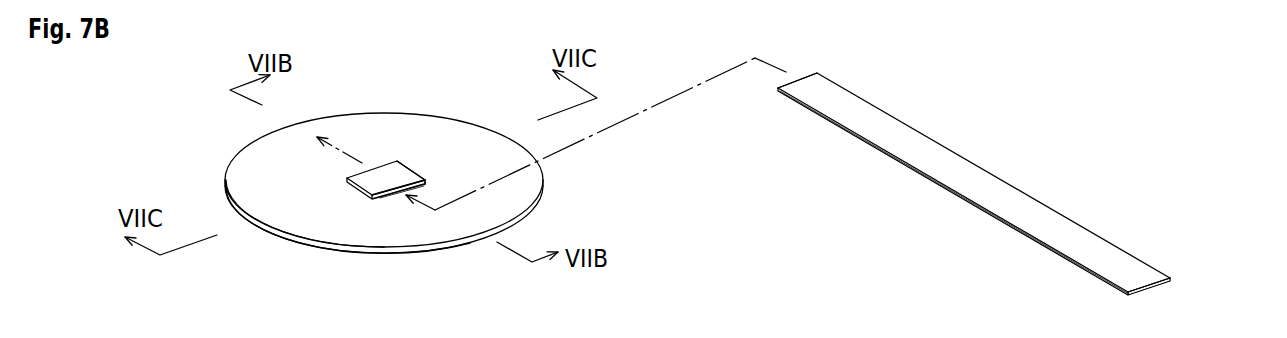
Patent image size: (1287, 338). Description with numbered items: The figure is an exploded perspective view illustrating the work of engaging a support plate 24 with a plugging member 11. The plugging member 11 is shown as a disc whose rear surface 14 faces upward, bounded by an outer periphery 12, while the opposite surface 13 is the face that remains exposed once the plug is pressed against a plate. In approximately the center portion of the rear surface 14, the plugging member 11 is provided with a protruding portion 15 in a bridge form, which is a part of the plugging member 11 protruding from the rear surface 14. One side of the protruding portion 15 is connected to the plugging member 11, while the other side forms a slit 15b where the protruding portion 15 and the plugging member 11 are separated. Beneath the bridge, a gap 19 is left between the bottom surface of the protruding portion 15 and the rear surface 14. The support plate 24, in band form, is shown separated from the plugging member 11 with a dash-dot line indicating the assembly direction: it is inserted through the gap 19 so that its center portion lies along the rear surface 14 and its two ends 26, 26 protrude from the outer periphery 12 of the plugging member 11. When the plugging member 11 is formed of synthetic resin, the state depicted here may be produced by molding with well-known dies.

The plugging member 11 is at (275, 155).
The outer periphery 12 is at (218, 187).
The surface 13 is at (316, 255).
The rear surface 14 is at (288, 220).
The protruding portion 15 is at (366, 184).
The slit 15b is at (420, 188).
The gap 19 is at (395, 198).
The support plate 24 is at (1032, 172).
The ends of support plate 26 is at (798, 78).